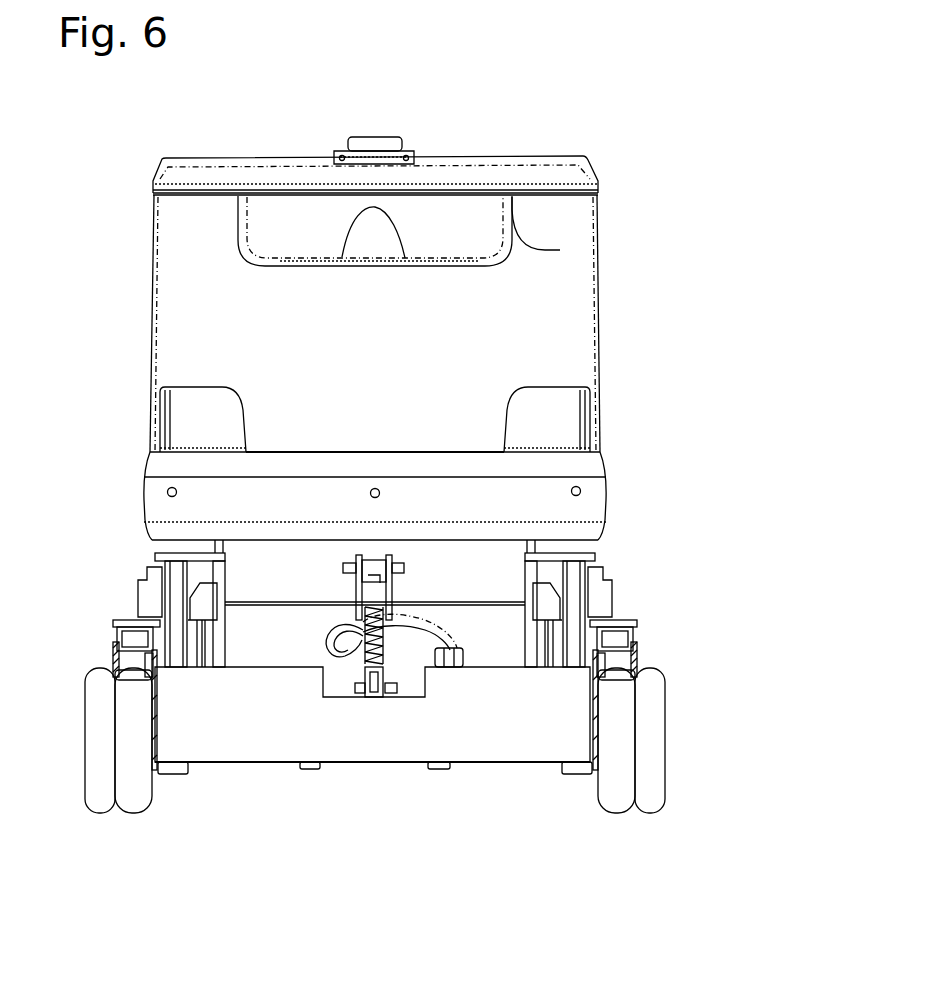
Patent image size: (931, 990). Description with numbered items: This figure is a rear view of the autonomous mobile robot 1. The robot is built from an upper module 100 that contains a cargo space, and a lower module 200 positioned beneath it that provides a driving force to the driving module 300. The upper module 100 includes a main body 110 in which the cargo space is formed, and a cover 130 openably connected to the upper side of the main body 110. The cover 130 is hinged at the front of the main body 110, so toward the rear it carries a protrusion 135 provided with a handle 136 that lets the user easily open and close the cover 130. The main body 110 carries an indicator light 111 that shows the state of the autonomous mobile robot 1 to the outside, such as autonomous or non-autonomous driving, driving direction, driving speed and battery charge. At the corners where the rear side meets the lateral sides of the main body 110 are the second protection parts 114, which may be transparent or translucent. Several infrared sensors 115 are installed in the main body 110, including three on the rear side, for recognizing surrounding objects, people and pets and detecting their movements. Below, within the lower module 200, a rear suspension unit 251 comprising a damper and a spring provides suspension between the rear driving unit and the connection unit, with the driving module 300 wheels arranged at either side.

The autonomous mobile robot 1 is at (548, 43).
The upper module 100 is at (626, 308).
The main body 110 is at (188, 305).
The indicator light 111 is at (503, 226).
The second protection part 114 is at (195, 417).
The infrared sensor 115 is at (167, 492).
The cover 130 is at (453, 160).
The protrusion 135 is at (308, 213).
The handle 136 is at (378, 237).
The lower module 200 is at (290, 802).
The rear suspension unit 251 is at (392, 660).
The driving module 300 is at (682, 742).